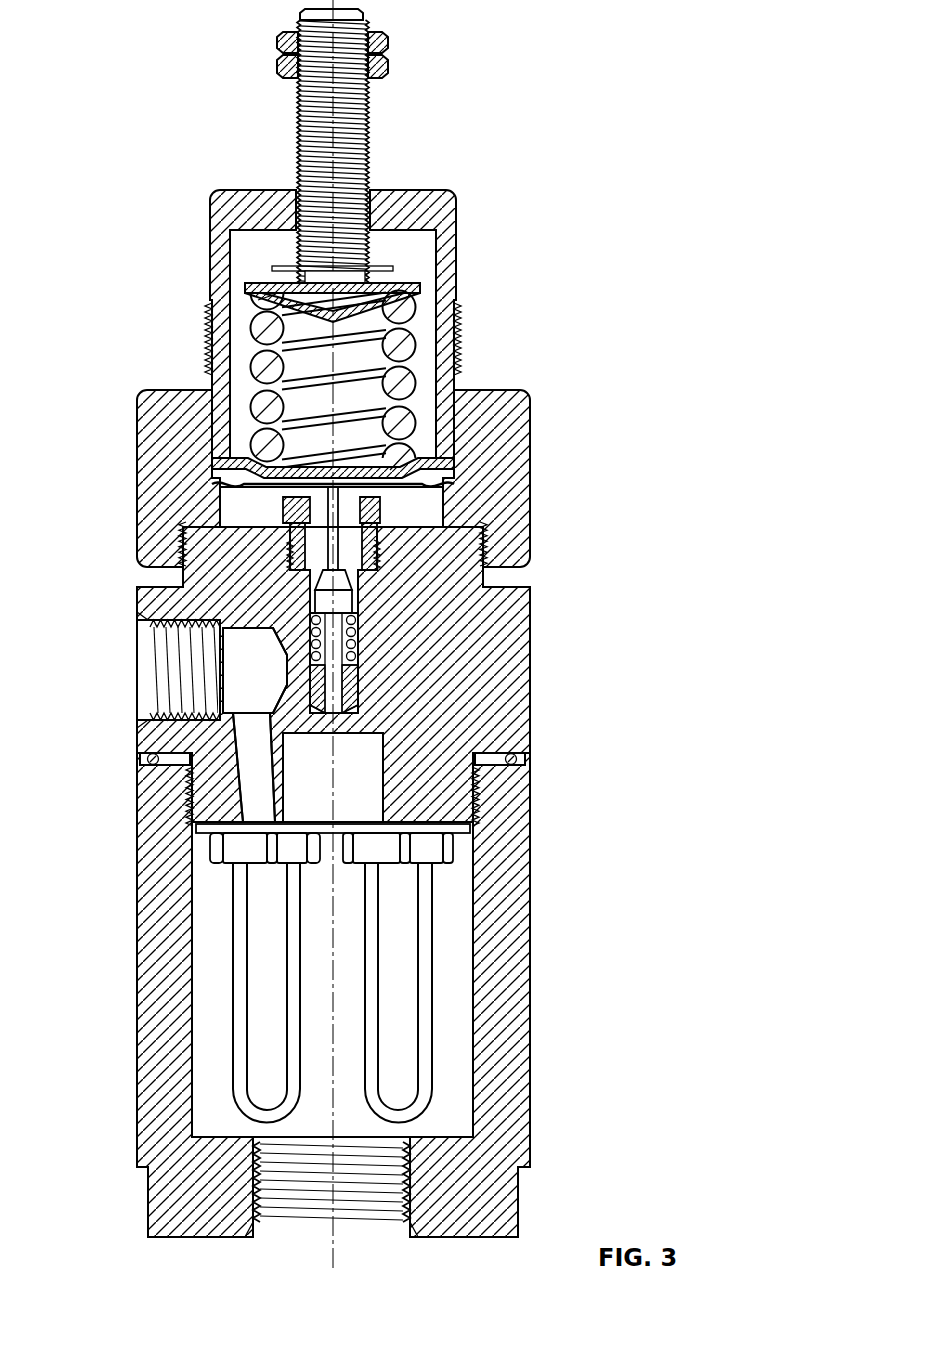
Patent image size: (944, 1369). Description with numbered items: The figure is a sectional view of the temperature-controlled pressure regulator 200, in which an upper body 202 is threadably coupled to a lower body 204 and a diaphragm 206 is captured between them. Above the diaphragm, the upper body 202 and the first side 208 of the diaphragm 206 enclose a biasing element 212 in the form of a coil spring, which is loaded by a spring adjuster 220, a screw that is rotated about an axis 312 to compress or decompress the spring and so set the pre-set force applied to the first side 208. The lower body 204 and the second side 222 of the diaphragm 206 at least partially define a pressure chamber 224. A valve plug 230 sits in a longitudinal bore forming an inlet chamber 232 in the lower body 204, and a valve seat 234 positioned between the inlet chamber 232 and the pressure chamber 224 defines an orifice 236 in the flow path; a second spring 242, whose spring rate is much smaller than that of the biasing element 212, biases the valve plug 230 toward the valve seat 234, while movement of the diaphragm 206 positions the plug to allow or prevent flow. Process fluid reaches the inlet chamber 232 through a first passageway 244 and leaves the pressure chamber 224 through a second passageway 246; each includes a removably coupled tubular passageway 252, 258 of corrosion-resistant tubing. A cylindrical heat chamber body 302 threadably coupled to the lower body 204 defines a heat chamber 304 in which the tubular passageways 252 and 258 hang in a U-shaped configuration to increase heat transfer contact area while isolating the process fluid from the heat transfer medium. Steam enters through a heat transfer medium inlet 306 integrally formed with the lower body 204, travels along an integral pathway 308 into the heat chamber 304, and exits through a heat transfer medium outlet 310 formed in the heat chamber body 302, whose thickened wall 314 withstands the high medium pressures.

The temperature-controlled pressure regulator 200 is at (137, 38).
The upper body 202 is at (456, 247).
The lower body 204 is at (530, 635).
The diaphragm 206 is at (205, 474).
The first side of the diaphragm 208 is at (457, 463).
The biasing element 212 is at (273, 332).
The spring adjuster 220 is at (368, 145).
The second side of the diaphragm 222 is at (245, 487).
The pressure chamber 224 is at (430, 513).
The valve plug 230 is at (330, 603).
The inlet chamber 232 is at (300, 586).
The valve seat 234 is at (378, 562).
The orifice 236 is at (303, 573).
The second spring 242 is at (357, 650).
The first passageway 244 is at (456, 903).
The second passageway 246 is at (214, 917).
The tubular passageway 252 is at (425, 1065).
The tubular passageway 258 is at (240, 1008).
The heat chamber body 302 is at (137, 833).
The heat chamber 304 is at (354, 1120).
The heat transfer medium inlet 306 is at (137, 704).
The pathway 308 is at (248, 731).
The heat transfer medium outlet 310 is at (297, 1237).
The axis 312 is at (328, 100).
The wall 314 is at (508, 972).